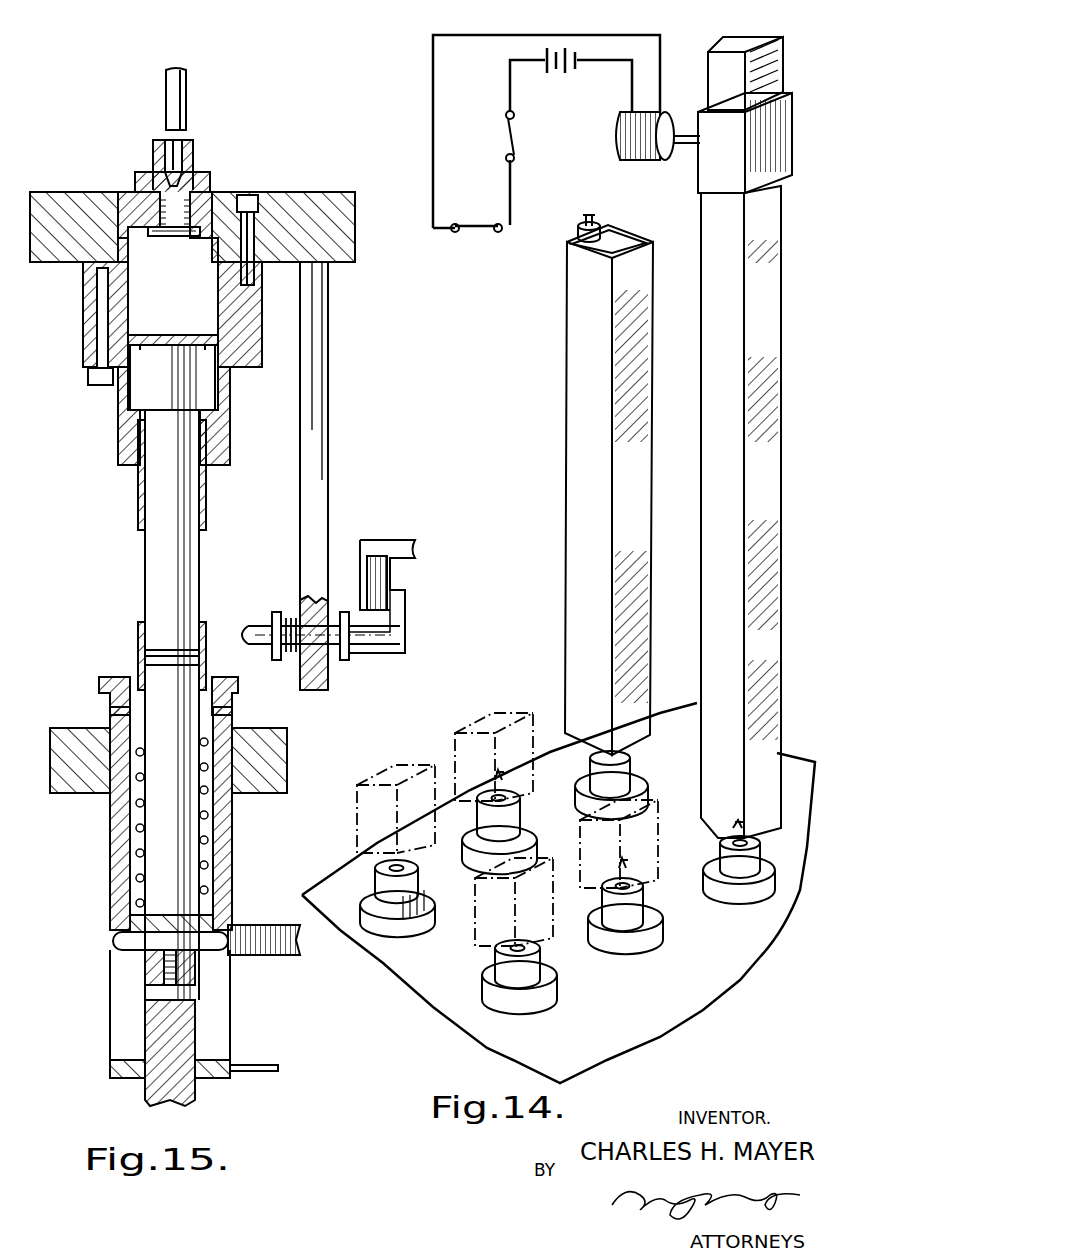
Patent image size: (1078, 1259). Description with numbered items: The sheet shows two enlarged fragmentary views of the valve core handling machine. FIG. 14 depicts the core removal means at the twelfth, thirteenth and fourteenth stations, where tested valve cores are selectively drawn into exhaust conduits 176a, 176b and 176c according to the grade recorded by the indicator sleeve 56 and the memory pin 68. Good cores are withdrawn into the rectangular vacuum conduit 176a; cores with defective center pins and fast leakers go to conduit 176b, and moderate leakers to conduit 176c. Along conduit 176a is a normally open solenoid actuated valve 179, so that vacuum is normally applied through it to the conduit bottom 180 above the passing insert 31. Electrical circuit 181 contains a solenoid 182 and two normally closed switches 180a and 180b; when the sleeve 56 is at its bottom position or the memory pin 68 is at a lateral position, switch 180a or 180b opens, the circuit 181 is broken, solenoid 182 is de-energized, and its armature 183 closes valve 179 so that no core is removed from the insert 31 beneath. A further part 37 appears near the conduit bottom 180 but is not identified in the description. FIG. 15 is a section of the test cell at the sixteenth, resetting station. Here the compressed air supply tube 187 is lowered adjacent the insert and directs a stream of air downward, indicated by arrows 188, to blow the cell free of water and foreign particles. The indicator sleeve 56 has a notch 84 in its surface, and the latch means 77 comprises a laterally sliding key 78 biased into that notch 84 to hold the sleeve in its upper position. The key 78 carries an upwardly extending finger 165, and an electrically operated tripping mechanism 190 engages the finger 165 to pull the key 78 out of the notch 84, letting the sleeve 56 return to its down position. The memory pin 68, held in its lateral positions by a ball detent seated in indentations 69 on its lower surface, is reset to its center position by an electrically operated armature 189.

In FIG. 15, the compressed air supply tube 187 is at (170, 99).
In FIG. 15, the arrows 188 is at (185, 46).
In FIG. 15, the insert 31 is at (138, 175).
In FIG. 14, the insert 31 is at (722, 888).
In FIG. 15, the notch 84 is at (232, 822).
In FIG. 15, the indicator sleeve 56 is at (232, 862).
In FIG. 15, the memory pin 68 is at (118, 946).
In FIG. 15, the armature 189 is at (258, 955).
In FIG. 15, the indentations 69 is at (175, 952).
In FIG. 15, the finger 165 is at (400, 613).
In FIG. 15, the tripping mechanism 190 is at (375, 560).
In FIG. 15, the key 78 is at (248, 626).
In FIG. 15, the latch means 77 is at (370, 664).
In FIG. 14, the electrical circuit 181 is at (532, 30).
In FIG. 14, the electrical switch 180a is at (532, 133).
In FIG. 14, the electrical switch 180b is at (480, 222).
In FIG. 14, the solenoid 182 is at (648, 162).
In FIG. 14, the armature 183 is at (678, 134).
In FIG. 14, the solenoid actuated valve 179 is at (795, 170).
In FIG. 14, the conduit bottom 180 is at (760, 780).
In FIG. 14, the screw 37 is at (735, 832).
In FIG. 14, the exhaust conduit 176a is at (758, 893).
In FIG. 14, the exhaust conduit 176b is at (668, 895).
In FIG. 14, the exhaust conduit 176c is at (553, 935).